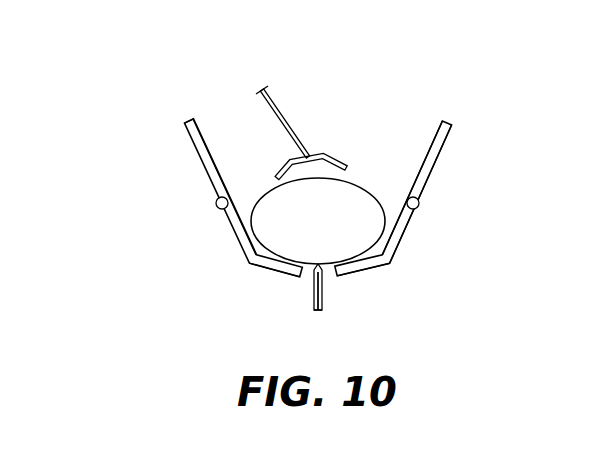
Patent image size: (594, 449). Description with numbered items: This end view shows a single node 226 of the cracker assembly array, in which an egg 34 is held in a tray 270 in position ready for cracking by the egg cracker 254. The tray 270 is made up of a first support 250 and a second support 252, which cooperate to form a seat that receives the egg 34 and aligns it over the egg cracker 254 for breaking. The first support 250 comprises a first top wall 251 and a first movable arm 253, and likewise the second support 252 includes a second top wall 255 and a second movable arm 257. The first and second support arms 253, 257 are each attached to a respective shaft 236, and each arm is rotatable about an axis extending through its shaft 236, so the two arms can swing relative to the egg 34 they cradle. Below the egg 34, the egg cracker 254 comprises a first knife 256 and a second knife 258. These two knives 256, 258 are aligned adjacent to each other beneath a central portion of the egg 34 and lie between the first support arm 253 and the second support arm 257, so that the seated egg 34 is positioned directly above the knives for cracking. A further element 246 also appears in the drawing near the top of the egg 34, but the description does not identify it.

The egg 34 is at (328, 227).
The node 226 is at (200, 96).
The shaft 236 is at (216, 203).
The release lever 246 is at (284, 118).
The first support 250 is at (201, 156).
The first top wall 251 is at (206, 158).
The second support 252 is at (444, 143).
The first movable arm 253 is at (238, 241).
The egg cracker 254 is at (340, 330).
The second top wall 255 is at (432, 146).
The first knife 256 is at (314, 297).
The second movable arm 257 is at (391, 261).
The second knife 258 is at (322, 297).
The tray 270 is at (409, 251).